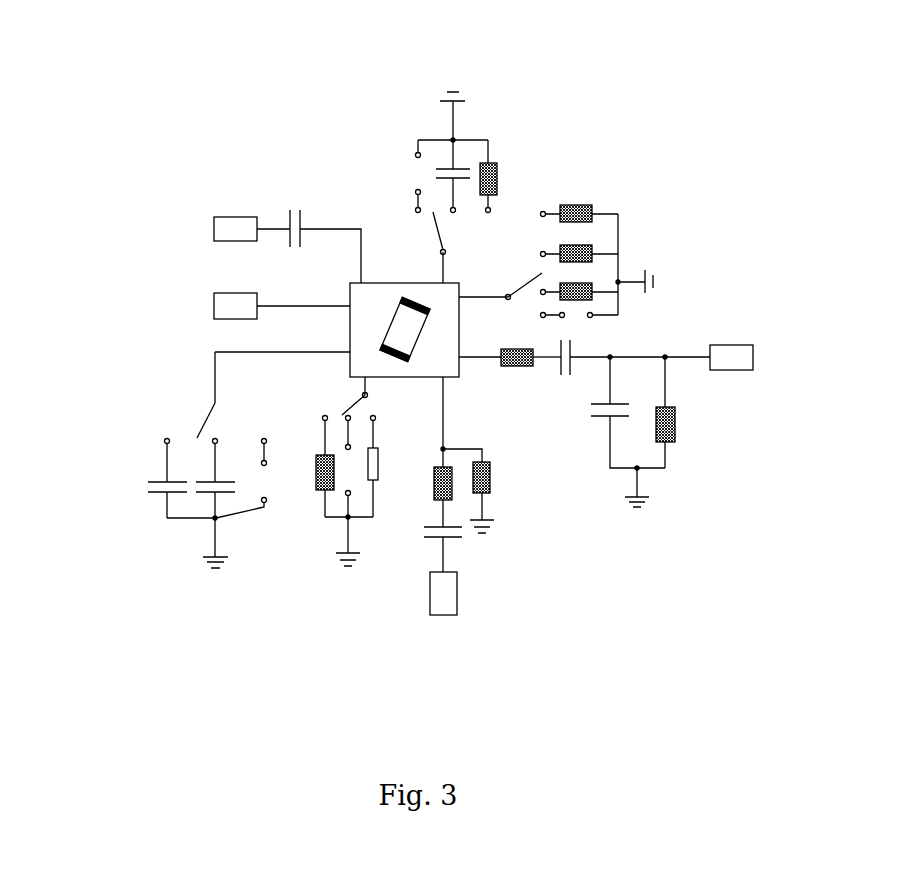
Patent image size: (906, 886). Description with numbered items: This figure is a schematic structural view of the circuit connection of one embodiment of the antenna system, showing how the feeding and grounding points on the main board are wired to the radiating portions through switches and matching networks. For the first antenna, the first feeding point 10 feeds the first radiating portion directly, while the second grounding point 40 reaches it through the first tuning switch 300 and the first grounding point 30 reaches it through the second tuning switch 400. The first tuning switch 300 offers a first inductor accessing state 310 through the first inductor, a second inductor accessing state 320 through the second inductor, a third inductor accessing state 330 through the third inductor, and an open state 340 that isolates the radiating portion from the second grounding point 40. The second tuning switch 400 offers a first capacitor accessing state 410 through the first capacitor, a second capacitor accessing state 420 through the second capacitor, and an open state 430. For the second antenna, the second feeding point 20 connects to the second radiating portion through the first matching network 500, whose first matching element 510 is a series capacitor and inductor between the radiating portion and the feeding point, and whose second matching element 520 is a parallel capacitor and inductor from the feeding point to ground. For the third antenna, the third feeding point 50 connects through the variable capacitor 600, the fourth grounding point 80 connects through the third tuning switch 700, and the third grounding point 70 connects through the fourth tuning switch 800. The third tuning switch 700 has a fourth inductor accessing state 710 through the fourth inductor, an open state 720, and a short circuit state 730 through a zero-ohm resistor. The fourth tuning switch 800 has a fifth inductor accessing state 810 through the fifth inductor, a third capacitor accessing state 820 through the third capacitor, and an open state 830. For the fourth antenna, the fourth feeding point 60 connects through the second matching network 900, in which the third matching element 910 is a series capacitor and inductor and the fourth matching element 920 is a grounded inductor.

The first feeding point 10 is at (232, 292).
The second feeding point 20 is at (735, 372).
The first grounding point 30 is at (215, 575).
The second grounding point 40 is at (655, 282).
The third feeding point 50 is at (232, 216).
The fourth feeding point 60 is at (445, 620).
The third grounding point 70 is at (452, 90).
The fourth grounding point 80 is at (349, 572).
The first tuning switch 300 is at (602, 225).
The first inductor accessing state 310 is at (610, 208).
The second inductor accessing state 320 is at (609, 252).
The third inductor accessing state 330 is at (607, 288).
The open state 340 is at (593, 317).
The second tuning switch 400 is at (168, 466).
The first capacitor accessing state 410 is at (166, 440).
The second capacitor accessing state 420 is at (214, 470).
The open state 430 is at (214, 519).
The first matching network 500 is at (605, 423).
The first matching element 510 is at (548, 368).
The second matching element 520 is at (606, 380).
The variable capacitor 600 is at (301, 214).
The third tuning switch 700 is at (330, 466).
The fourth inductor accessing state 710 is at (318, 454).
The open state 720 is at (347, 430).
The short circuit state 730 is at (379, 450).
The fourth tuning switch 800 is at (450, 138).
The fifth inductor accessing state 810 is at (453, 163).
The third capacitor accessing state 820 is at (490, 152).
The open state 830 is at (415, 191).
The second matching network 900 is at (468, 553).
The third matching element 910 is at (416, 544).
The fourth matching element 920 is at (492, 478).